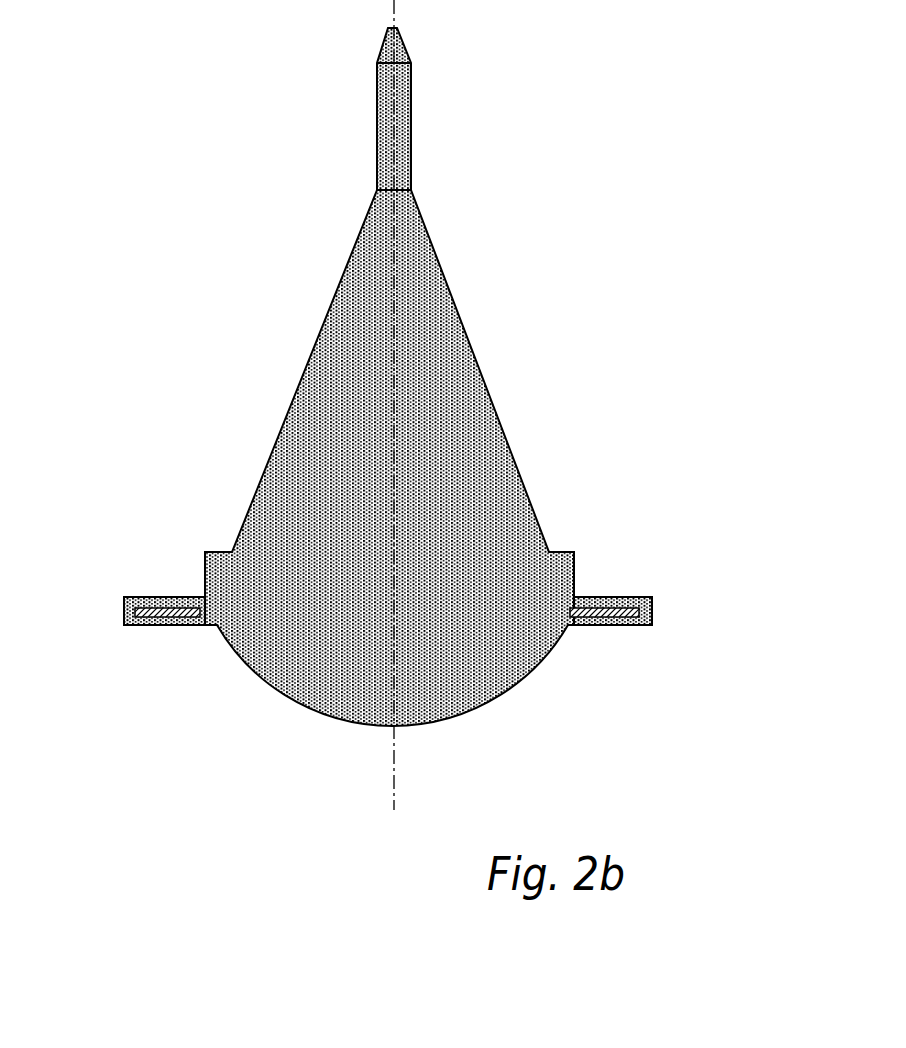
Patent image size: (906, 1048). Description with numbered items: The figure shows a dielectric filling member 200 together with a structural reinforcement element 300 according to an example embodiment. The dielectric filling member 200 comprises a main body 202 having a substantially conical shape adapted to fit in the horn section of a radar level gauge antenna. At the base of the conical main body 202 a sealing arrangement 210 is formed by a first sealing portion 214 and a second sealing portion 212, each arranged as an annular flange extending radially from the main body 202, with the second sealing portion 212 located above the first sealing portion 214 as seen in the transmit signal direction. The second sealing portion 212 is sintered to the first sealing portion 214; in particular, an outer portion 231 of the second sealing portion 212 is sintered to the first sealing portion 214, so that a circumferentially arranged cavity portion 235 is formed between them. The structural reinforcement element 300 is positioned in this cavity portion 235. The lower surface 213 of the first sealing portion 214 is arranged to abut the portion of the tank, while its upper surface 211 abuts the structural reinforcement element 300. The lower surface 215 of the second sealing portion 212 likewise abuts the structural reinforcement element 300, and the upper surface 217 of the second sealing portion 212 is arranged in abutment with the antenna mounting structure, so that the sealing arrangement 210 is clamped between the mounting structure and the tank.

The dielectric filling member 200 is at (457, 367).
The main body 202 is at (485, 475).
The sealing arrangement 210 is at (411, 405).
The upper surface 211 is at (587, 627).
The second sealing portion 212 is at (163, 596).
The lower surface 213 is at (631, 627).
The first sealing portion 214 is at (175, 626).
The lower surface 215 is at (173, 596).
The upper surface 217 is at (148, 596).
The outer portion 231 is at (130, 593).
The cavity portion 235 is at (187, 596).
The structural reinforcement element 300 is at (600, 608).